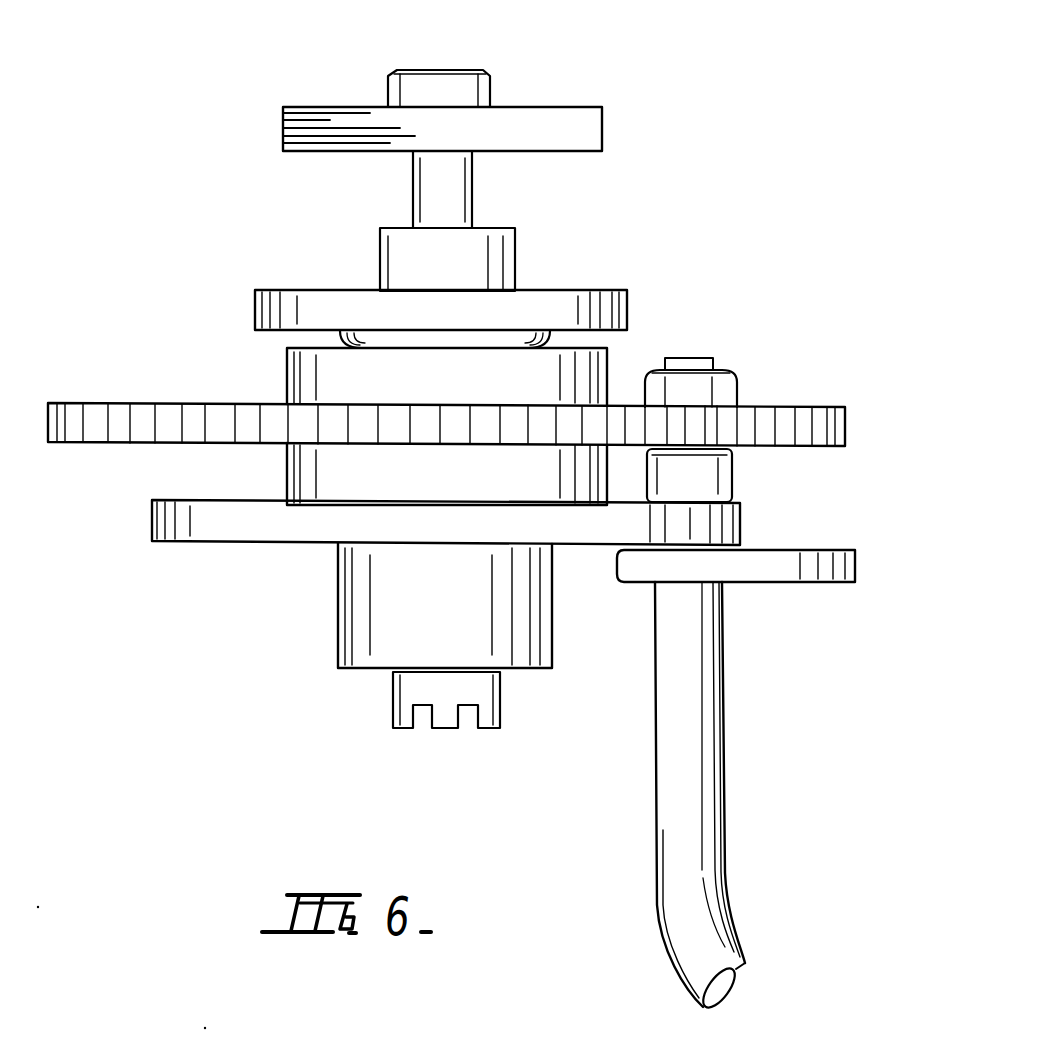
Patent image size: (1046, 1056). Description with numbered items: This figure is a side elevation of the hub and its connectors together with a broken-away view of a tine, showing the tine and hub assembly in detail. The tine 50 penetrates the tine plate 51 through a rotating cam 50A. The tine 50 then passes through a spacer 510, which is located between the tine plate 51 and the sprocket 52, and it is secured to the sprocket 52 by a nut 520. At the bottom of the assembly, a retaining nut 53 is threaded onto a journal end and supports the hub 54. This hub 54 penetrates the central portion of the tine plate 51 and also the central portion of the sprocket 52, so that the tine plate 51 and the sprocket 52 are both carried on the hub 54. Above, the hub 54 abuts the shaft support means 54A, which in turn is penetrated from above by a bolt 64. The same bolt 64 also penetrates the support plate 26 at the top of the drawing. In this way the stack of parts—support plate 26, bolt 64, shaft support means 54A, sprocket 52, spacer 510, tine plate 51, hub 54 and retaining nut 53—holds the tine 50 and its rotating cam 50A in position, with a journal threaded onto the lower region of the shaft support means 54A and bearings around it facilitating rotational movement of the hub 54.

The bolt 64 is at (420, 80).
The support plate 26 is at (287, 135).
The shaft support means 54A is at (628, 298).
The hub 54 is at (318, 473).
The sprocket 52 is at (847, 430).
The nut 520 is at (727, 383).
The spacer 510 is at (717, 475).
The tine plate 51 is at (232, 523).
The retaining nut 53 is at (398, 712).
The rotating cam 50A is at (790, 575).
The tine 50 is at (697, 780).